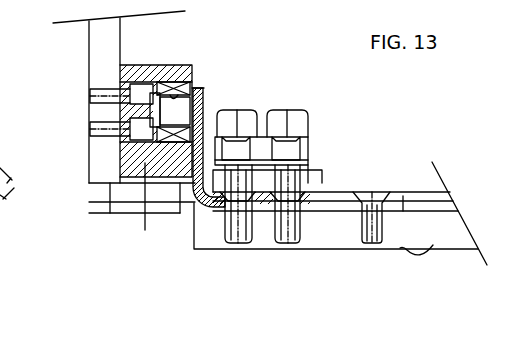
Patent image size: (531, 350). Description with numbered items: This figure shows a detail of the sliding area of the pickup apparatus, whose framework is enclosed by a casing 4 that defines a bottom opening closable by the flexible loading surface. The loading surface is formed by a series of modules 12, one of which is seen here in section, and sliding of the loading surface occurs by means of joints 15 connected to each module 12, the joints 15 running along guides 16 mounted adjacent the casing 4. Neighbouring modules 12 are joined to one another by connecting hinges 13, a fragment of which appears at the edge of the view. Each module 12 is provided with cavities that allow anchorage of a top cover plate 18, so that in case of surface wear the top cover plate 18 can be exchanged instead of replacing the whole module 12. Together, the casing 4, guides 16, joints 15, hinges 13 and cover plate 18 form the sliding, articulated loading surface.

The casing 4 is at (88, 42).
The module 12 is at (433, 245).
The connecting hinge 13 is at (0, 238).
The joint 15 is at (198, 91).
The guide 16 is at (155, 66).
The top cover plate 18 is at (420, 192).